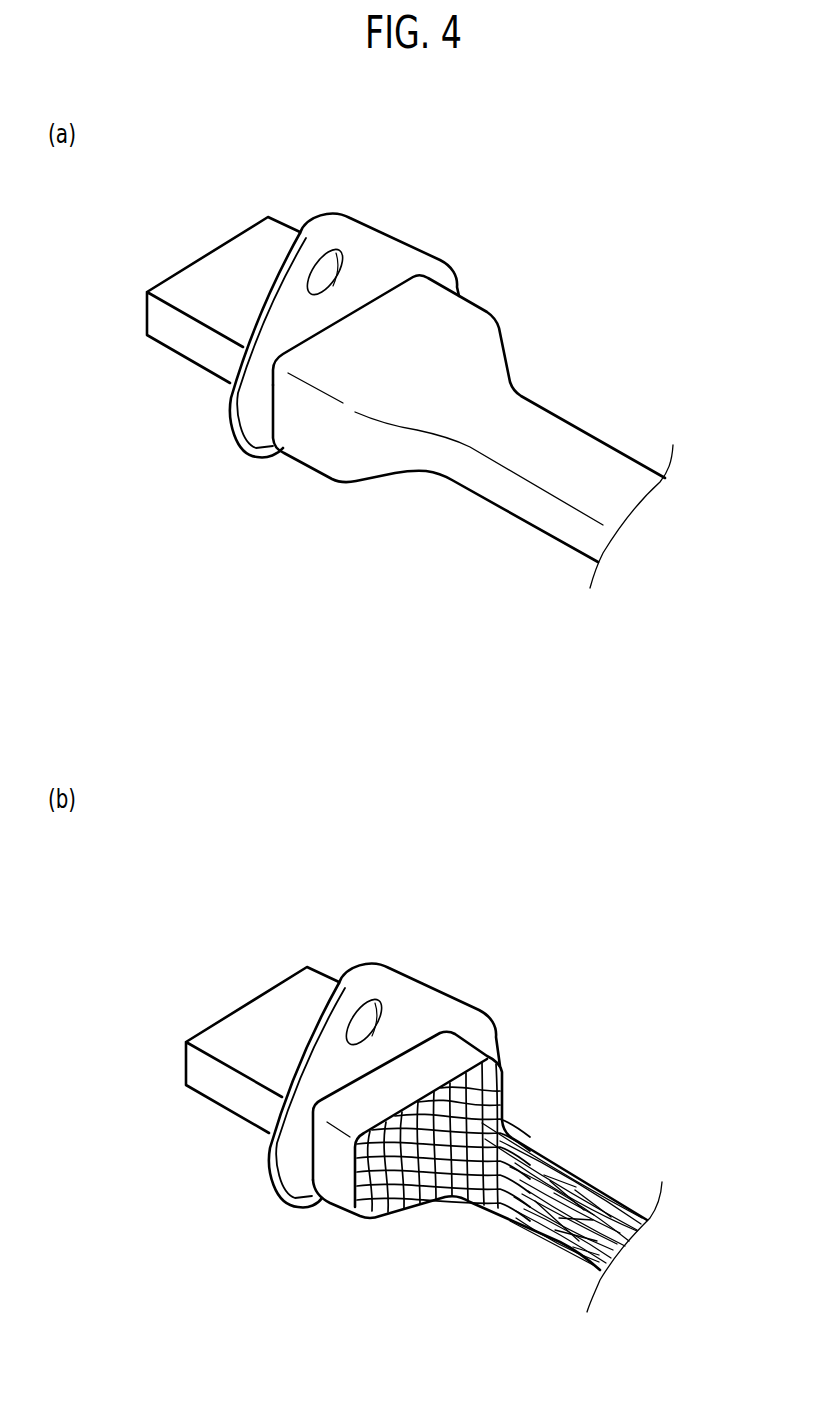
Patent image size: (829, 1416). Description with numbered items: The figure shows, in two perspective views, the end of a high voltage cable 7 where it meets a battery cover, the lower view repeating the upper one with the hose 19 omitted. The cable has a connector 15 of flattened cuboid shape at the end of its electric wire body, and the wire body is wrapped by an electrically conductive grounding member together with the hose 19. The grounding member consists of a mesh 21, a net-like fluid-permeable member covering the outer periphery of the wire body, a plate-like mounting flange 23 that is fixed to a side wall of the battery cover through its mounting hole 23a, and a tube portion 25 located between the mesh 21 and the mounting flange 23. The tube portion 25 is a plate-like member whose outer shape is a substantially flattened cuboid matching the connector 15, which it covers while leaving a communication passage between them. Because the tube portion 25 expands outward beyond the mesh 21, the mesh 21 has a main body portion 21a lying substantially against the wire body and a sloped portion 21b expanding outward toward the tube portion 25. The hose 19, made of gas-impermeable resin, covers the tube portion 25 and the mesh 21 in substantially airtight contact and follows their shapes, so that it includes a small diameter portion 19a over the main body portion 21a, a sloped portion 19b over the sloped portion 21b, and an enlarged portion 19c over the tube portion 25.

The high voltage cable 7 is at (458, 470).
The connector 15 is at (183, 343).
The hose 19 is at (458, 470).
The small diameter portion 19a is at (560, 478).
The sloped portion 19b is at (398, 462).
The enlarged portion 19c is at (320, 443).
The mesh 21 is at (530, 1183).
The main body portion 21a is at (548, 1187).
The sloped portion 21b is at (488, 1095).
The mounting flange 23 is at (384, 685).
The mounting hole 23a is at (323, 270).
The tube portion 25 is at (327, 1172).